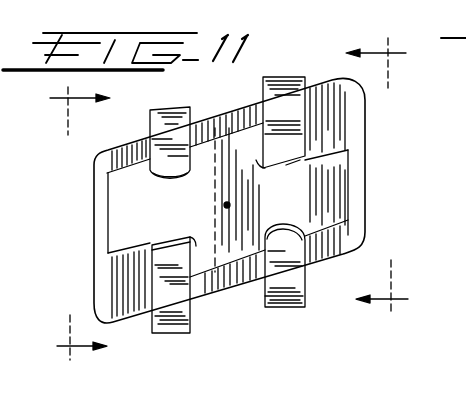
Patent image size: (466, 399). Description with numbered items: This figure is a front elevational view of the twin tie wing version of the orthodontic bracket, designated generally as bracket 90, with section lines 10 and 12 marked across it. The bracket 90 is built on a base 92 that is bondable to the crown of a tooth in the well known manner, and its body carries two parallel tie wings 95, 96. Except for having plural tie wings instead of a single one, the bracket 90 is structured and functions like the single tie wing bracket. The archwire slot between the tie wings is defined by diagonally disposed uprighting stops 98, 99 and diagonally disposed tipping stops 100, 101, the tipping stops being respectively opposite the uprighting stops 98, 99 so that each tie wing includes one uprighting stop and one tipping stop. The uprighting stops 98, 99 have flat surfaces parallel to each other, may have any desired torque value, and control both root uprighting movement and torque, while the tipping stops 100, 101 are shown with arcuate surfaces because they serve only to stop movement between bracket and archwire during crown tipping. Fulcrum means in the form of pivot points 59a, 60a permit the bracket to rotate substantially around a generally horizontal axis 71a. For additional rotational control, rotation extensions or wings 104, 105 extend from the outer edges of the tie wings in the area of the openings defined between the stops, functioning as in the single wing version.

The section line 10- 10 is at (71, 226).
The section line 12- 12 is at (406, 175).
The twin tie wing bracket 90 is at (97, 155).
The base 92 is at (345, 123).
The tie wing 95 is at (158, 108).
The tie wing 96 is at (275, 77).
The pivot point 59a is at (262, 168).
The uprighting stop 98 is at (286, 165).
The uprighting stop 99 is at (168, 242).
The tipping stop 100 is at (348, 220).
The tipping stop 101 is at (148, 177).
The rotation extension 104 is at (125, 232).
The rotation extension 105 is at (338, 195).
The pivot point 60a is at (195, 240).
The horizontal axis 71a is at (227, 205).